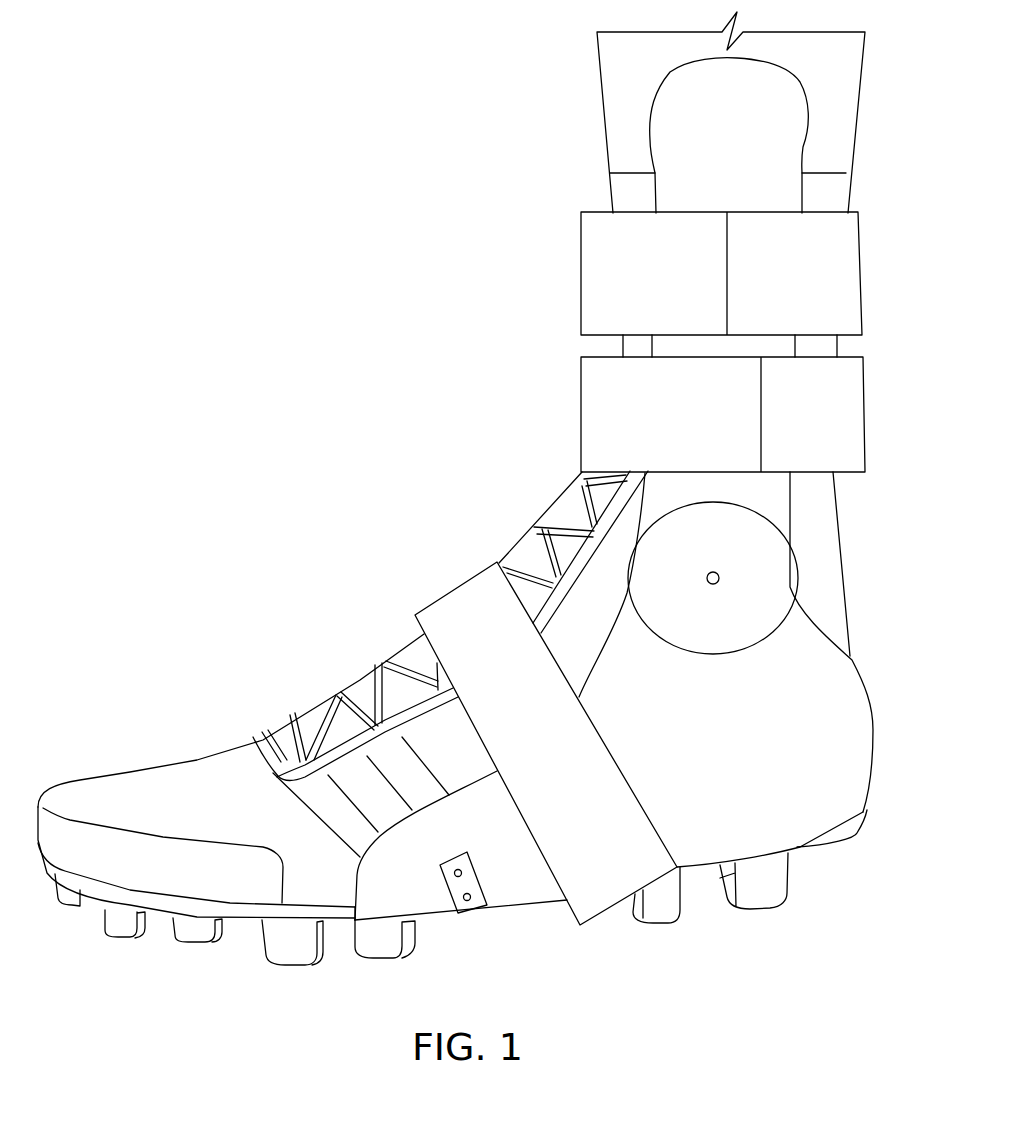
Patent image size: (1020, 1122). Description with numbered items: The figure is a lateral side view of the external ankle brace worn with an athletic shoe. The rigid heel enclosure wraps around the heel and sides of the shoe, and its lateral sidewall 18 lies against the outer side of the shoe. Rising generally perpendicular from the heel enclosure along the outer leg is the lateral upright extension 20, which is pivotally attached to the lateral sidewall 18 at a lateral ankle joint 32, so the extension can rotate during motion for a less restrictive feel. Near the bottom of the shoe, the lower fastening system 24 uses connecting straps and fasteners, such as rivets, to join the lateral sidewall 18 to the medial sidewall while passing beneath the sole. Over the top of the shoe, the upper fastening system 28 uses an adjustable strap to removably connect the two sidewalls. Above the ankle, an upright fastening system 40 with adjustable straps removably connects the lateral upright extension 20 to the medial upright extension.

The lateral sidewall 18 is at (810, 716).
The lateral upright extension 20 is at (755, 168).
The lower fastening system 24 is at (473, 920).
The upper fastening system 28 is at (605, 920).
The lateral ankle joint 32 is at (760, 571).
The upright fastening system 40 is at (870, 269).